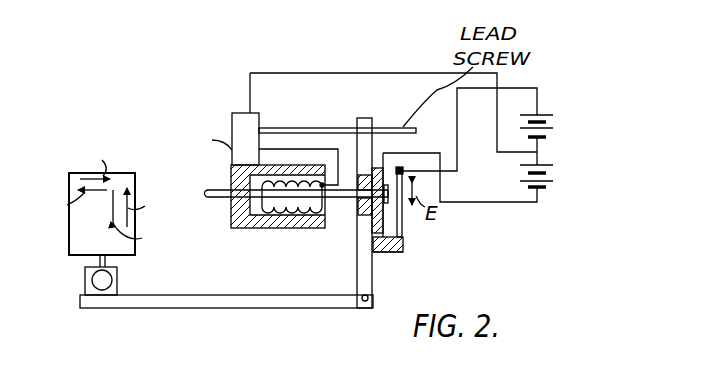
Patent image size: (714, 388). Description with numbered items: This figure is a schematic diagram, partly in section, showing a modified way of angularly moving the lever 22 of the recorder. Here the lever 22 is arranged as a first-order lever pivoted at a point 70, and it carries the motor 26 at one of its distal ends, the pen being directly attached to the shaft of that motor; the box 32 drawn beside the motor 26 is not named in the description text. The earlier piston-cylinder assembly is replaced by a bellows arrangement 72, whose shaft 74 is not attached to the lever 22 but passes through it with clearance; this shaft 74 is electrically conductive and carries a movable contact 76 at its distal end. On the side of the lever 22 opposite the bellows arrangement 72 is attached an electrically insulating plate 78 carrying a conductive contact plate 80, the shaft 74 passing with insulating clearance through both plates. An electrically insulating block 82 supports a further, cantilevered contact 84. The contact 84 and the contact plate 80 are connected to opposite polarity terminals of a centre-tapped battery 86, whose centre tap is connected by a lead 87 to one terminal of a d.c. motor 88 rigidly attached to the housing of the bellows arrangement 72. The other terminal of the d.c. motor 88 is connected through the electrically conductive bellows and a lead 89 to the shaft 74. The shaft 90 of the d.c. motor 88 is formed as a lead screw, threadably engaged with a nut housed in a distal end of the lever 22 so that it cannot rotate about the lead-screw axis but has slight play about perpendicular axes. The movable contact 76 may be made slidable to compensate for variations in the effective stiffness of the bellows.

The lever 22 is at (227, 309).
The motor 26 is at (86, 278).
The cam box 32 is at (68, 229).
The pivot point 70 is at (362, 296).
The bellows arrangement 72 is at (261, 231).
The shaft 74 is at (350, 200).
The movable contact 76 is at (389, 198).
The electrically insulating plate 78 is at (373, 167).
The conductive contact plate 80 is at (374, 232).
The electrically insulating block 82 is at (380, 255).
The cantilevered contact 84 is at (403, 246).
The centre-tapped battery 86 is at (601, 129).
The lead 87 is at (384, 73).
The d.c. motor 88 is at (240, 121).
The lead 89 is at (313, 148).
The shaft 90 is at (300, 115).